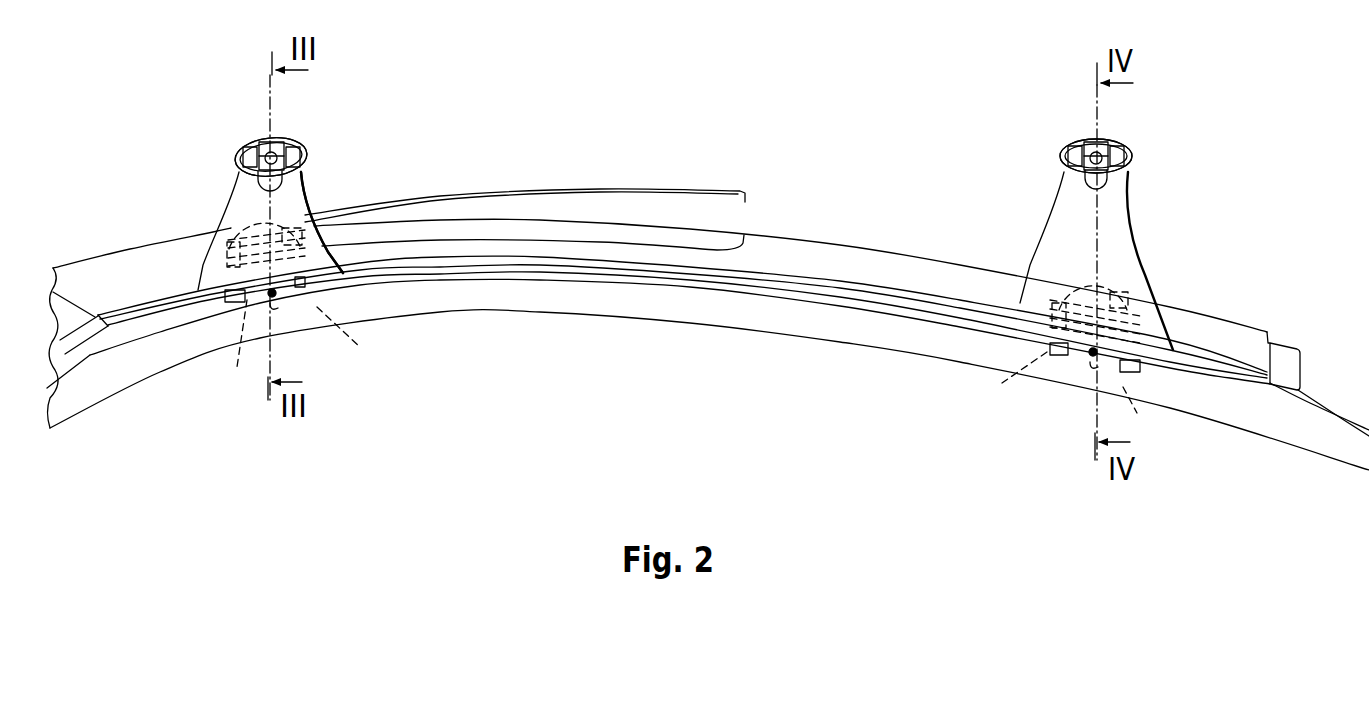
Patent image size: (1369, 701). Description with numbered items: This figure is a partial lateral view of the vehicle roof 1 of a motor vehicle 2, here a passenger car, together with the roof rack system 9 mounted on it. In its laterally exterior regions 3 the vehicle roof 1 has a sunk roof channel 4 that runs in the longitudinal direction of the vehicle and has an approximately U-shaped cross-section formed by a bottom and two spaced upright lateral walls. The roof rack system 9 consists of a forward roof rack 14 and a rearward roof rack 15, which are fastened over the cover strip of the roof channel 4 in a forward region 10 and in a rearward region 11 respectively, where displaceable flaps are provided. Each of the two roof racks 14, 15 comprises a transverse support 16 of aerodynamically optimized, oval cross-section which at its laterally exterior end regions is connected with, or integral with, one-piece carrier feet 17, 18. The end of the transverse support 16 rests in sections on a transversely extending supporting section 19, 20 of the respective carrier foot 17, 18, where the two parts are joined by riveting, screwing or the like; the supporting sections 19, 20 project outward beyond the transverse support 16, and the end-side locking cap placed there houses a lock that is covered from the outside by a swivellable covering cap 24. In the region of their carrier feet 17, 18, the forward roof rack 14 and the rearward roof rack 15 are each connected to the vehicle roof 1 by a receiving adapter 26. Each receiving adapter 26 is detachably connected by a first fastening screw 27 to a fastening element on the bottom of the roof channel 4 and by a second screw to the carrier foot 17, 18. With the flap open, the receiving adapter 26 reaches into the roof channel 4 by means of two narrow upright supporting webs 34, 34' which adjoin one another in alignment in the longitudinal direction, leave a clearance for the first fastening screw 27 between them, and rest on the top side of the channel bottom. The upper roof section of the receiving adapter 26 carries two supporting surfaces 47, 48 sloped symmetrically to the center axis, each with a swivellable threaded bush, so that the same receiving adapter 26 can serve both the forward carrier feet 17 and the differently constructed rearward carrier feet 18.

The vehicle roof 1 is at (1240, 312).
The motor vehicle 2 is at (70, 430).
The laterally exterior regions 3 is at (112, 300).
The roof channel 4 is at (775, 322).
The roof rack system 9 is at (203, 190).
The forward region 10 is at (230, 312).
The rearward region 11 is at (1133, 363).
The forward roof rack 14 is at (233, 140).
The rearward roof rack 15 is at (1133, 142).
The transverse support 16 is at (288, 135).
The carrier foot 17 is at (307, 202).
The carrier foot 18 is at (1050, 210).
The supporting section 19 is at (237, 163).
The supporting section 20 is at (1130, 172).
The covering cap 24 is at (303, 177).
The receiving adapter 26 is at (318, 254).
The first fastening screw 27 is at (277, 310).
The supporting web 34 is at (633, 359).
The supporting web 34' is at (742, 377).
The supporting surface 47 is at (227, 223).
The supporting surface 48 is at (340, 207).